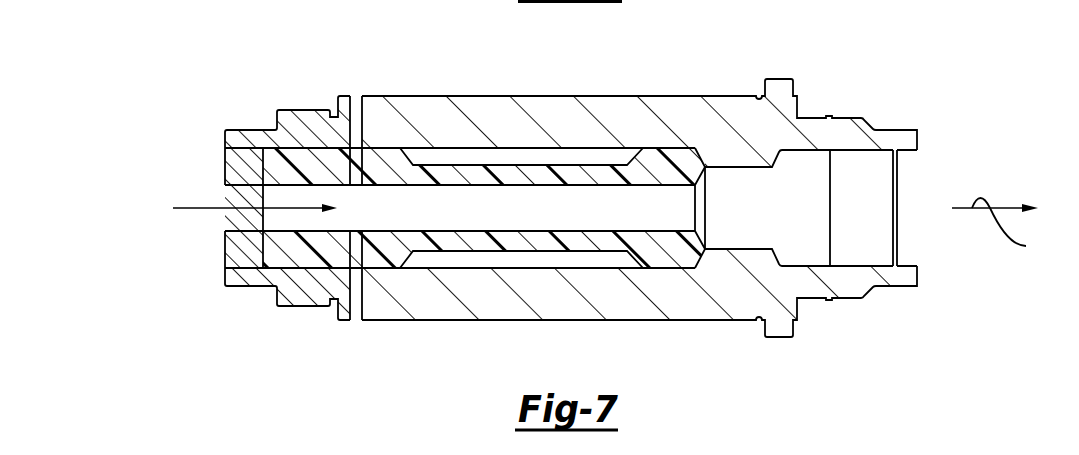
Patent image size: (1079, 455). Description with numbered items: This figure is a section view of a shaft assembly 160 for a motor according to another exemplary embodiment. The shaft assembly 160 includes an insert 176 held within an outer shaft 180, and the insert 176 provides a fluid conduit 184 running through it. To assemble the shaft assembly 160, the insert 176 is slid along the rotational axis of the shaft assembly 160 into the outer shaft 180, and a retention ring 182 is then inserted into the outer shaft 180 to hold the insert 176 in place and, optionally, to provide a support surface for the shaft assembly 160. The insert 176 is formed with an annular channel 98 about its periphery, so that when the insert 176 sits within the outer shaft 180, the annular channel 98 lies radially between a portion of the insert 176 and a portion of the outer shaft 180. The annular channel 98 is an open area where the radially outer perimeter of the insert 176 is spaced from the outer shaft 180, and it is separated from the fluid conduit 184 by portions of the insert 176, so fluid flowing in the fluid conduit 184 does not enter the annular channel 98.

The shaft assembly 160 is at (770, 38).
The insert 176 is at (380, 157).
The outer shaft 180 is at (521, 115).
The retention ring 182 is at (238, 252).
The fluid conduit 184 is at (410, 190).
The annular channel 98 is at (530, 272).